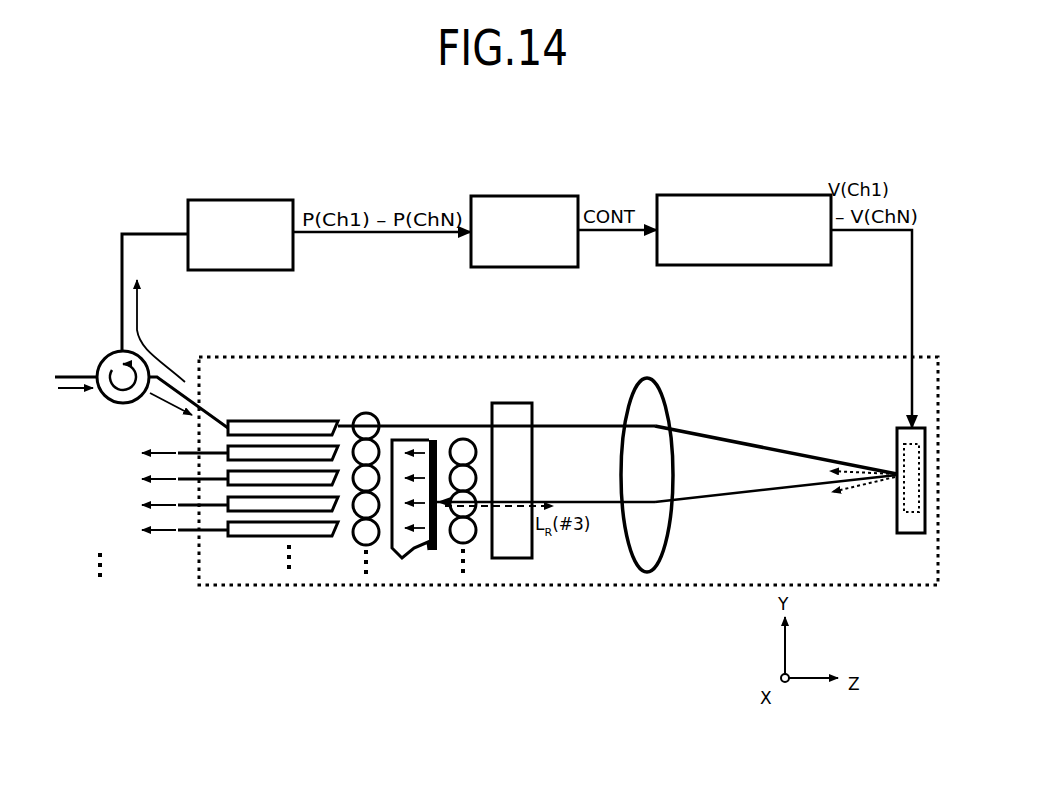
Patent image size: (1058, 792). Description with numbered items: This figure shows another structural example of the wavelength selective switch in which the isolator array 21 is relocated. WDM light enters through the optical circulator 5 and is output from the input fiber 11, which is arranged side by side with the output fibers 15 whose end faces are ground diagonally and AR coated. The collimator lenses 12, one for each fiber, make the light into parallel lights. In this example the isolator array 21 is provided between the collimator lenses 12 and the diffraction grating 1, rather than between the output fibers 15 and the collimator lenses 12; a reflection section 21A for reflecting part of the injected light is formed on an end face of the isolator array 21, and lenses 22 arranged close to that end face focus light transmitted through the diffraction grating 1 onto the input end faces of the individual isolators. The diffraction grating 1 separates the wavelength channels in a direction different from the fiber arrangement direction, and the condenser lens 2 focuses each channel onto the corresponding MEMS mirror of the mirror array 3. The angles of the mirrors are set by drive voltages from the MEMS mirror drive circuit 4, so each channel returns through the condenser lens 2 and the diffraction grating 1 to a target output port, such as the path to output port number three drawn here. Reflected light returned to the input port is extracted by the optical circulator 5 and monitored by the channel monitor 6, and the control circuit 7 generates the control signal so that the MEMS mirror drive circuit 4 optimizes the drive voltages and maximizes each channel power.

The diffraction grating 1 is at (510, 403).
The condenser lens 2 is at (640, 380).
The mirror array 3 is at (912, 533).
The MEMS mirror drive circuit 4 is at (712, 195).
The optical circulator 5 is at (108, 355).
The channel monitor 6 is at (224, 200).
The control circuit 7 is at (512, 196).
The input fiber 11 is at (271, 420).
The collimator lenses 12 is at (363, 413).
The output fibers 15 is at (284, 436).
The isolator array 21 is at (424, 441).
The reflection section 21A is at (437, 440).
The lenses 22 is at (463, 440).